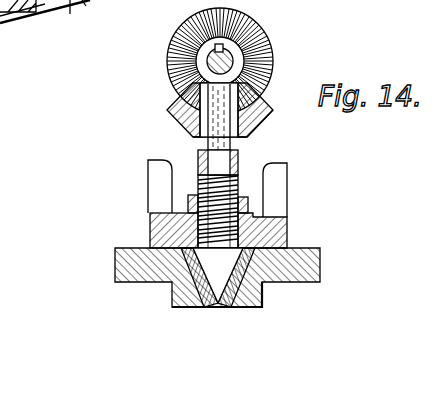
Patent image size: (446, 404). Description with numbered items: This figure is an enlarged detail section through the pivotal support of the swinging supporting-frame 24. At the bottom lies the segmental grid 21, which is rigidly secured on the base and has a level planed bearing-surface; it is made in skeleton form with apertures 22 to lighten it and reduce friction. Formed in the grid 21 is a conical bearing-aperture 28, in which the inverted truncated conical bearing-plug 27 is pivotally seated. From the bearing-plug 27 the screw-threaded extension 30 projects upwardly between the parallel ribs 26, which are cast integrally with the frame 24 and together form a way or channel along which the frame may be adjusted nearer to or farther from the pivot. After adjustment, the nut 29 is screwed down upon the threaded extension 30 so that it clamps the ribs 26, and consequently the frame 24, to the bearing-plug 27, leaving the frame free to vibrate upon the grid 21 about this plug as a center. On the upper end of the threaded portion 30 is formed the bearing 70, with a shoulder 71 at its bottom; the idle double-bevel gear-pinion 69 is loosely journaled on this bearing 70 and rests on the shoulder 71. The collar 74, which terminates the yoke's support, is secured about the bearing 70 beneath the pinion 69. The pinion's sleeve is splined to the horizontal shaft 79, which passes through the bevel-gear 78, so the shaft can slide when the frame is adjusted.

The segmental grid 21 is at (153, 268).
The apertures 22 is at (21, 8).
The supporting-frame 24 is at (162, 233).
The parallel ribs 26 is at (161, 198).
The bearing-plug 27 is at (212, 306).
The bearing-aperture 28 is at (262, 290).
The nut 29 is at (248, 209).
The screw-threaded extension 30 is at (213, 192).
The idle double-bevel gear-pinion 69 is at (266, 106).
The bearing 70 is at (214, 119).
The shoulder 71 is at (251, 133).
The collar 74 is at (203, 163).
The bevel-gear 78 is at (232, 34).
The horizontal shaft 79 is at (207, 60).